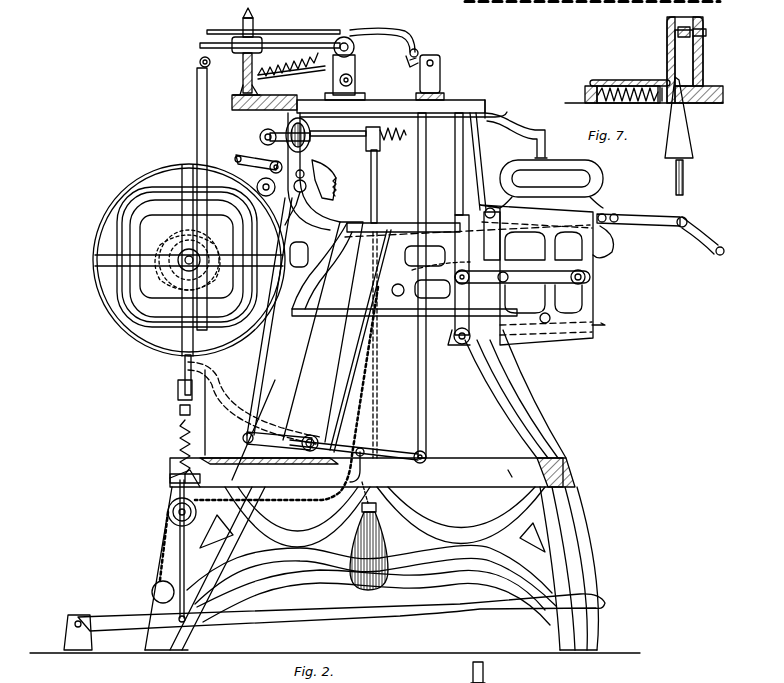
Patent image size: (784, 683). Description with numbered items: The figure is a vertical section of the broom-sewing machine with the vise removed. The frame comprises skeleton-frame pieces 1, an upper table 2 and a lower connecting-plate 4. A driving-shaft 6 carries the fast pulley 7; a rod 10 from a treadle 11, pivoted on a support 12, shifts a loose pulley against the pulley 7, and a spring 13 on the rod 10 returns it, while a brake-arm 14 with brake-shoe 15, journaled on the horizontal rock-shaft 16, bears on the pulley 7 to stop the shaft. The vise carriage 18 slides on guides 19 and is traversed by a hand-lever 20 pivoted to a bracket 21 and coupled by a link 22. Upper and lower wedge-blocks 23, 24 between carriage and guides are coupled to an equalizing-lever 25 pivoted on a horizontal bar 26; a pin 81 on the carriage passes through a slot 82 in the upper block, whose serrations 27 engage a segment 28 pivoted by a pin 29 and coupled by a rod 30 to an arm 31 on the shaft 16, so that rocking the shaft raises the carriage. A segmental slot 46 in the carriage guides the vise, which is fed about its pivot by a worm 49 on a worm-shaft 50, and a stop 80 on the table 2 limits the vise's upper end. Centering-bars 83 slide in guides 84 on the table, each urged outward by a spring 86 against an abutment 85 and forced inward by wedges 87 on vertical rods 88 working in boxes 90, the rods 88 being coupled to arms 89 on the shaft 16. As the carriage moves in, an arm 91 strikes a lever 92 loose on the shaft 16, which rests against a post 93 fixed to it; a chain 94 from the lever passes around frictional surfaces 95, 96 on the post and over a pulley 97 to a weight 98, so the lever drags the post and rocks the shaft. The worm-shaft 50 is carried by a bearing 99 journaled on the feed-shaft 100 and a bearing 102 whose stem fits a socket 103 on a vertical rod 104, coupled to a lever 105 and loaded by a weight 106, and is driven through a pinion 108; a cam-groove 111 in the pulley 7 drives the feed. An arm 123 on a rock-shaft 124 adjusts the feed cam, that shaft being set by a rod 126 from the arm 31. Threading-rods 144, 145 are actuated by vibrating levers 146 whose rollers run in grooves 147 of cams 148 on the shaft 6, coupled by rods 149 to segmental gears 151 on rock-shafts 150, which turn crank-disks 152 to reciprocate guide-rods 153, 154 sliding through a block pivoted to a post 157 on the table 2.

In FIG. 2, the standards or skeleton-frame pieces 1 is at (544, 401).
In FIG. 2, the upper table 2 is at (369, 102).
In FIG. 2, the lower connecting-plate 4 is at (372, 472).
In FIG. 2, the driving-shaft 6 is at (178, 258).
In FIG. 2, the fast pulley 7 is at (142, 340).
In FIG. 2, the rod 10 is at (185, 567).
In FIG. 2, the treadle 11 is at (341, 615).
In FIG. 2, the support 12 is at (67, 632).
In FIG. 2, the spring 13 is at (175, 451).
In FIG. 2, the brake-arm 14 is at (254, 403).
In FIG. 2, the brake-shoe 15 is at (210, 358).
In FIG. 2, the horizontal rock-shaft 16 is at (306, 436).
In FIG. 2, the sliding block or carriage 18 is at (545, 275).
In FIG. 2, the horizontal guides or ways 19 is at (404, 333).
In FIG. 2, the hand-lever 20 is at (703, 236).
In FIG. 2, the bracket 21 is at (612, 242).
In FIG. 2, the link 22 is at (642, 214).
In FIG. 2, the upper wedge-block 23 is at (473, 161).
In FIG. 2, the lower wedge-block 24 is at (468, 333).
In FIG. 2, the equalizing-lever 25 is at (458, 275).
In FIG. 2, the horizontal bar 26 is at (501, 273).
In FIG. 2, the teeth or serrations 27 is at (450, 164).
In FIG. 2, the segment 28 is at (313, 192).
In FIG. 2, the pin 29 is at (260, 183).
In FIG. 2, the rod 30 is at (292, 233).
In FIG. 2, the arm 31 is at (277, 442).
In FIG. 2, the segmental slot 46 is at (551, 184).
In FIG. 2, the worm 49 is at (394, 142).
In FIG. 2, the worm-shaft 50 is at (338, 143).
In FIG. 2, the stop 80 is at (527, 135).
In FIG. 2, the pin 81 is at (499, 236).
In FIG. 2, the slot 82 is at (492, 200).
In FIG. 7, the centering-bars 83 is at (699, 104).
In FIG. 2, the guides 84 is at (416, 95).
In FIG. 7, the guides 84 is at (630, 74).
In FIG. 7, the abutment 85 is at (666, 104).
In FIG. 7, the spring 86 is at (622, 103).
In FIG. 7, the wedges 87 is at (688, 136).
In FIG. 2, the vertical rods 88 is at (434, 285).
In FIG. 2, the arms 89 is at (358, 445).
In FIG. 2, the boxes 90 is at (441, 74).
In FIG. 7, the boxes 90 is at (686, 60).
In FIG. 2, the arm 91 is at (462, 234).
In FIG. 2, the lever 92 is at (323, 332).
In FIG. 2, the post 93 is at (352, 372).
In FIG. 2, the chain or cord 94 is at (366, 407).
In FIG. 2, the frictional surface 95 is at (362, 300).
In FIG. 2, the frictional surface 96 is at (365, 465).
In FIG. 2, the pulley 97 is at (196, 512).
In FIG. 2, the weight 98 is at (151, 594).
In FIG. 2, the bearing 99 is at (286, 133).
In FIG. 2, the feed-shaft 100 is at (261, 140).
In FIG. 2, the bearing 102 is at (366, 132).
In FIG. 2, the socket 103 is at (498, 672).
In FIG. 2, the vertical rod 104 is at (377, 206).
In FIG. 2, the lever 105 is at (398, 296).
In FIG. 2, the weight 106 is at (382, 538).
In FIG. 2, the pinion 108 is at (302, 170).
In FIG. 2, the cam-groove 111 is at (187, 257).
In FIG. 2, the arm 123 is at (256, 162).
In FIG. 2, the rock-shaft 124 is at (289, 161).
In FIG. 2, the rod 126 is at (248, 339).
In FIG. 2, the threading-rod 144 is at (384, 37).
In FIG. 2, the threading-rod 145 is at (398, 57).
In FIG. 2, the vibrating levers 146 is at (197, 128).
In FIG. 2, the grooves 147 is at (188, 258).
In FIG. 2, the cams 148 is at (183, 256).
In FIG. 2, the rods 149 is at (288, 73).
In FIG. 2, the rock-shafts 150 is at (353, 80).
In FIG. 2, the segmental gears 151 is at (332, 72).
In FIG. 2, the crank-disks 152 is at (345, 68).
In FIG. 2, the guide-rod 153 is at (273, 23).
In FIG. 2, the guide-rod 154 is at (204, 43).
In FIG. 2, the post 157 is at (231, 51).